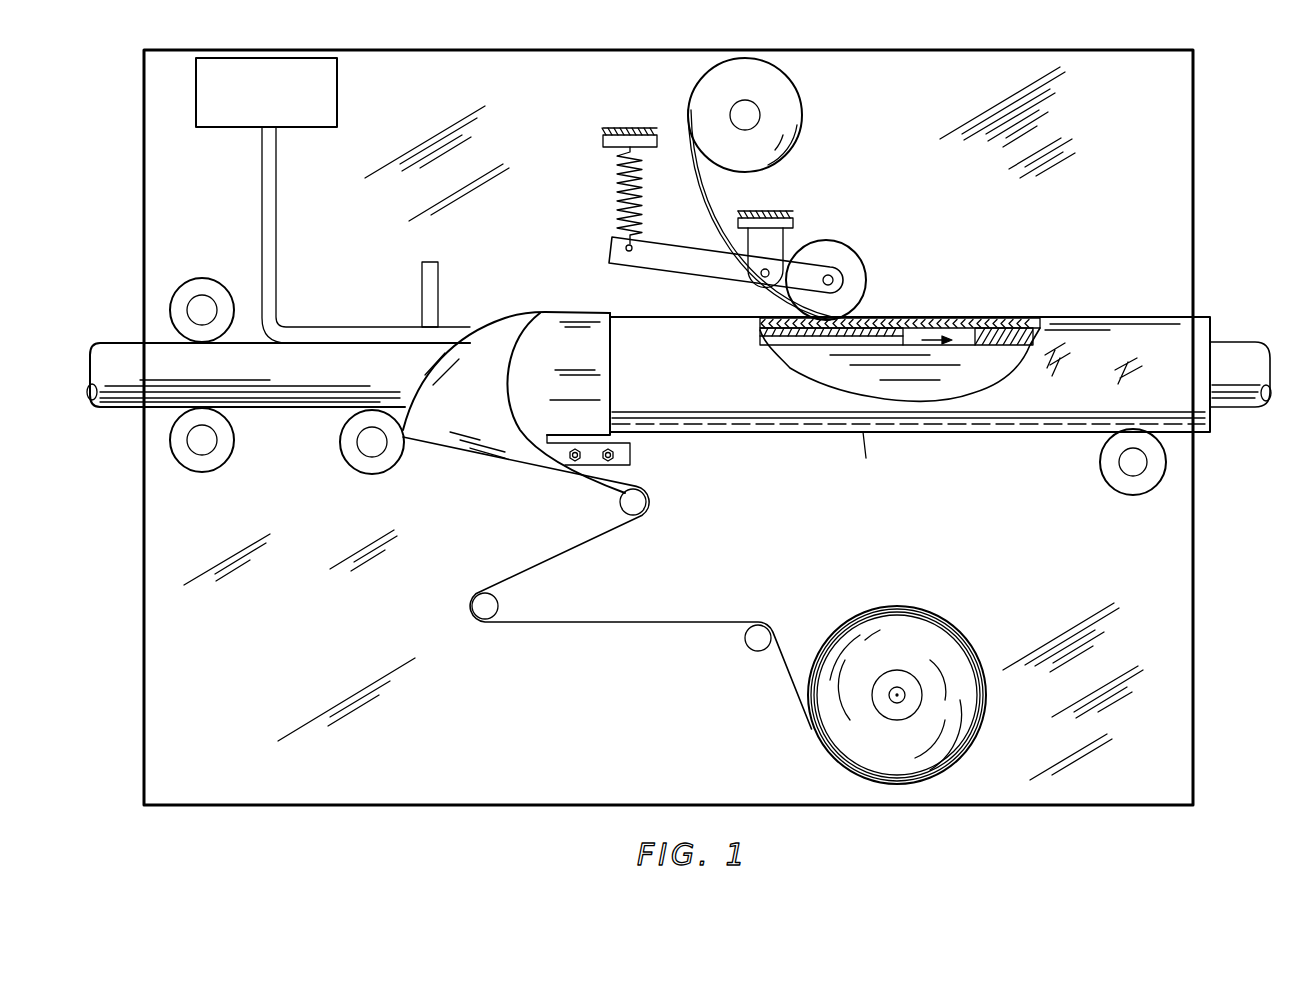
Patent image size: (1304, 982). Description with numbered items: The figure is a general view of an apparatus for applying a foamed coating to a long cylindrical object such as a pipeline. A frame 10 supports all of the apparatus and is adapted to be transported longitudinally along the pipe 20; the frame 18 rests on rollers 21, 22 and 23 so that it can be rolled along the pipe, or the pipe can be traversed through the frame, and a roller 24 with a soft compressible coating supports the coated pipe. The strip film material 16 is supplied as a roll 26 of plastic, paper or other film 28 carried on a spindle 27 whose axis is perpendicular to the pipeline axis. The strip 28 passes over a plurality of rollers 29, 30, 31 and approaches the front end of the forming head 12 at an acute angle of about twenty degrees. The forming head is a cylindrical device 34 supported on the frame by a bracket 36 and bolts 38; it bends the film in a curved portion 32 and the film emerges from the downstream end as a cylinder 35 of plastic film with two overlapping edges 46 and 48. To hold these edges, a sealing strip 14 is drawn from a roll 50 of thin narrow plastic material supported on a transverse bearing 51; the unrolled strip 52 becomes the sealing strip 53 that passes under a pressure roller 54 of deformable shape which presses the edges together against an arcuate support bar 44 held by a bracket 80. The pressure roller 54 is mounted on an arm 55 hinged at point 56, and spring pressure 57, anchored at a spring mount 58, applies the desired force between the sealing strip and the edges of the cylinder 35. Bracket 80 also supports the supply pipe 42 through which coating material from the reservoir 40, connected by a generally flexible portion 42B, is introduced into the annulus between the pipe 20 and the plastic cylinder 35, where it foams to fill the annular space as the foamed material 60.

The frame 10 is at (116, 571).
The forming head 12 is at (549, 276).
The sealing strip 14 is at (835, 179).
The strip film material 16 is at (930, 610).
The frame 18 is at (289, 639).
The pipe 20 is at (312, 412).
The roller 21 is at (222, 458).
The roller 22 is at (210, 285).
The roller 23 is at (398, 466).
The roller 24 is at (1118, 498).
The roll of film 26 is at (937, 648).
The spindle 27 is at (885, 703).
The film strip 28 is at (790, 655).
The roller 29 is at (752, 648).
The roller 30 is at (498, 606).
The roller 31 is at (644, 512).
The curved portion 32 is at (433, 418).
The cylindrical device 34 is at (557, 358).
The cylinder of plastic film 35 is at (872, 456).
The bracket 36 is at (632, 458).
The bolts 38 is at (605, 462).
The reservoir 40 is at (337, 107).
The supply pipe 42 is at (903, 340).
The flexible portion 42B is at (275, 222).
The arcuate support bar 44 is at (882, 316).
The overlapping edge 46 is at (960, 320).
The overlapping edge 48 is at (1005, 320).
The roll of sealing strip 50 is at (803, 122).
The transverse bearing 51 is at (750, 112).
The tape 52 is at (706, 212).
The sealing strip 53 is at (692, 176).
The pressure roller 54 is at (858, 258).
The arm 55 is at (684, 245).
The hinge point 56 is at (770, 270).
The spring 57 is at (617, 180).
The spring anchor bracket 58 is at (603, 140).
The foamed coating material 60 is at (1030, 322).
The bracket 80 is at (437, 278).